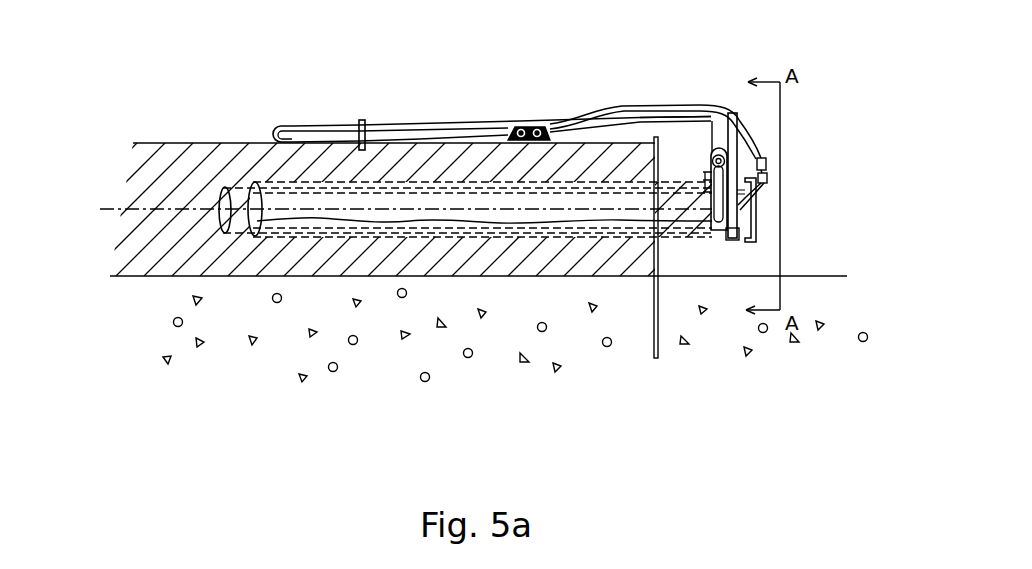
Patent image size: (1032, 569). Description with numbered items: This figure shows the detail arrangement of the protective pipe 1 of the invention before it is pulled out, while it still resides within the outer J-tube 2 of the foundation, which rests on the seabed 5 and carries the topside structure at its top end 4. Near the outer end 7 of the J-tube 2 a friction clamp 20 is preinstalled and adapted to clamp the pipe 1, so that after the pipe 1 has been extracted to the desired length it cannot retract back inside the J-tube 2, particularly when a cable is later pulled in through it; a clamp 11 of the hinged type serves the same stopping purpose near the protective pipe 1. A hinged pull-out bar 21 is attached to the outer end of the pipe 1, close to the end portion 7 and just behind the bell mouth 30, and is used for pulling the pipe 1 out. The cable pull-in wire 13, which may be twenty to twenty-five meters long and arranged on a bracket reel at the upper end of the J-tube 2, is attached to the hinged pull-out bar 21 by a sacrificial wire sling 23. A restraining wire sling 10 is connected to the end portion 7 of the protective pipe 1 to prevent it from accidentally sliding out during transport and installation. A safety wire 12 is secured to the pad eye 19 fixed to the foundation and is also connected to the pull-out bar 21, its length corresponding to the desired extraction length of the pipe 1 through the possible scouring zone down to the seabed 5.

The protective pipe 1 is at (243, 183).
The J-tube 2 is at (270, 237).
The top end 4 is at (183, 143).
The seabed 5 is at (165, 360).
The outer end 7 is at (709, 232).
The restraining wire sling 10 is at (603, 109).
The clamp 11 is at (740, 240).
The safety wire 12 is at (341, 126).
The cable pull-in wire 13 is at (534, 228).
The pad eye 19 is at (529, 127).
The friction clamp 20 is at (704, 117).
The hinged pull-out bar 21 is at (730, 113).
The sacrificial wire sling 23 is at (753, 147).
The bell mouth 30 is at (753, 225).